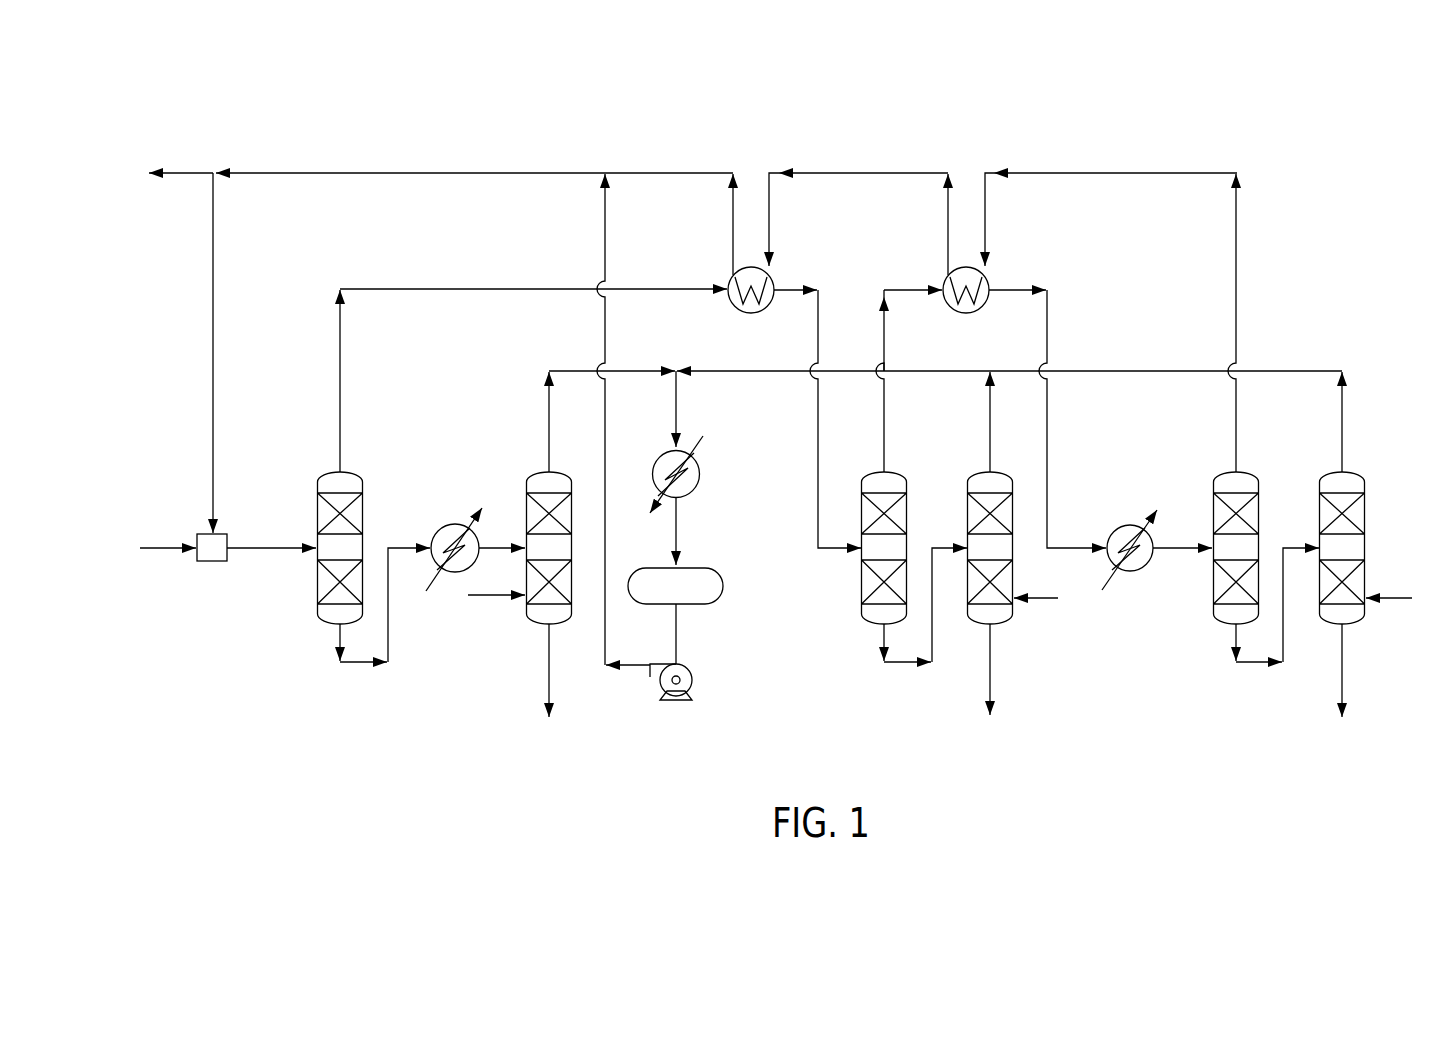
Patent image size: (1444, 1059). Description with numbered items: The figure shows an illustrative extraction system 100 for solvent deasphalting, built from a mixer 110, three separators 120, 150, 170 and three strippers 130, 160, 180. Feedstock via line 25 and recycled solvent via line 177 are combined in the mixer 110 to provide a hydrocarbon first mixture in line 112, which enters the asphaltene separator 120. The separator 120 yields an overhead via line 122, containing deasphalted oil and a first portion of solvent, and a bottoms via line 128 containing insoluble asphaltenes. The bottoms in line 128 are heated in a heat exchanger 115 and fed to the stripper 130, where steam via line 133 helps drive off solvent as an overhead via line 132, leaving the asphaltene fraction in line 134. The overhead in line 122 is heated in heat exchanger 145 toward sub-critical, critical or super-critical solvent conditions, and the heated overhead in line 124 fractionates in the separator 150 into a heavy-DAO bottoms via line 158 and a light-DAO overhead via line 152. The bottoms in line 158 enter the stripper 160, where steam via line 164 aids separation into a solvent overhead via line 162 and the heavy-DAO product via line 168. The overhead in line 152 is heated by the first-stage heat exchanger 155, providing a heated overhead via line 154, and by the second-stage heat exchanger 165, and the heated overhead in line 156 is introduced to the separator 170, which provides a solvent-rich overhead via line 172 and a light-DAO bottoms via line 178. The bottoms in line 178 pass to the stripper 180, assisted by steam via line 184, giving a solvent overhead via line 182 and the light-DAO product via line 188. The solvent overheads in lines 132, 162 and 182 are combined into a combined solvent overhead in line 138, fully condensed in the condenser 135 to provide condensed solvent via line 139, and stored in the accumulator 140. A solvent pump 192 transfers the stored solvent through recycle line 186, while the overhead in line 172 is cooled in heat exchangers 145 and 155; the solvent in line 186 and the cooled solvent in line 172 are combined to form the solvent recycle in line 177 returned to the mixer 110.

The extraction system 100 is at (1180, 116).
The feedstock line 25 is at (155, 562).
The mixer 110 is at (213, 562).
The hydrocarbon mixture line 112 is at (250, 562).
The heat exchanger 115 is at (432, 530).
The asphaltene separator 120 is at (363, 487).
The asphaltene separator overhead line 122 is at (423, 289).
The heated overhead line 124 is at (817, 439).
The asphaltene separator bottoms line 128 is at (355, 663).
The asphaltene stripper 130 is at (526, 494).
The stripper overhead line 132 is at (548, 396).
The steam line 133 is at (483, 596).
The asphaltene bottoms line 134 is at (548, 685).
The condenser 135 is at (699, 480).
The combined solvent overhead line 138 is at (677, 399).
The condensed solvent line 139 is at (677, 527).
The accumulator 140 is at (690, 605).
The heat exchanger 145 is at (752, 314).
The separator 150 is at (862, 577).
The separator overhead line 152 is at (885, 441).
The heated overhead line 154 is at (1011, 289).
The first-stage heat exchanger 155 is at (967, 314).
The heated overhead line 156 is at (1173, 545).
The separator bottoms line 158 is at (903, 663).
The stripper 160 is at (1014, 566).
The stripper overhead line 162 is at (990, 397).
The steam line 164 is at (1047, 600).
The second-stage heat exchanger 165 is at (1108, 532).
The heavy-DAO bottoms line 168 is at (991, 688).
The separator 170 is at (1259, 486).
The overhead line 172 is at (688, 173).
The solvent recycle line 177 is at (448, 173).
The separator bottoms line 178 is at (1252, 663).
The stripper 180 is at (1366, 571).
The stripper overhead line 182 is at (1343, 405).
The steam line 184 is at (1403, 600).
The recycle line 186 is at (605, 322).
The light-DAO bottoms line 188 is at (1343, 690).
The solvent pump 192 is at (674, 703).